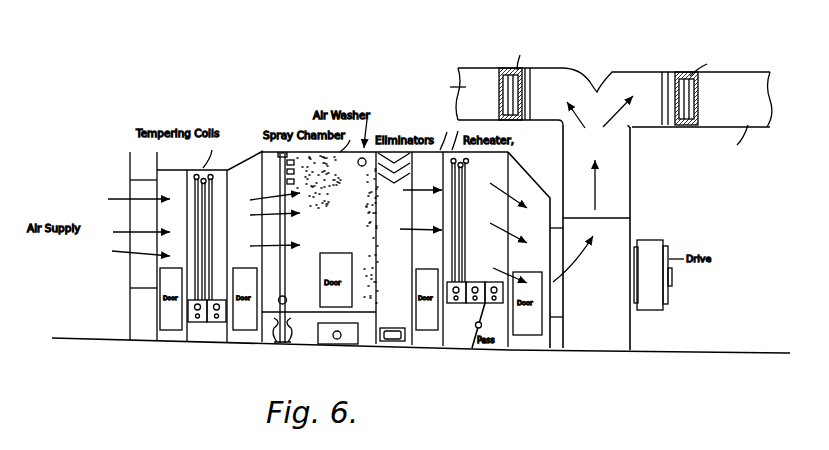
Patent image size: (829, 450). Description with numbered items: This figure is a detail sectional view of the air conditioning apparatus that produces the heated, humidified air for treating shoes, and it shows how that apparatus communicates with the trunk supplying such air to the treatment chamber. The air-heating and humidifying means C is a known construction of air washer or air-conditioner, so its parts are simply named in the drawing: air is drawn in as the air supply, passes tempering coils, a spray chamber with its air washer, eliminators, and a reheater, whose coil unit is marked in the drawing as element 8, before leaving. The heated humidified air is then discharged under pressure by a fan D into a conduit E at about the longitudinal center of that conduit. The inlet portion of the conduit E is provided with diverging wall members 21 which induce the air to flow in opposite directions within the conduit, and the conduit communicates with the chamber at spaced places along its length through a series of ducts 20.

The ducts 20 is at (528, 70).
The diverging wall members 21 is at (601, 75).
The conduit E is at (560, 80).
The fan D is at (610, 247).
The air-heating and humidifying means C is at (423, 338).
The reheater coil 8 is at (466, 318).